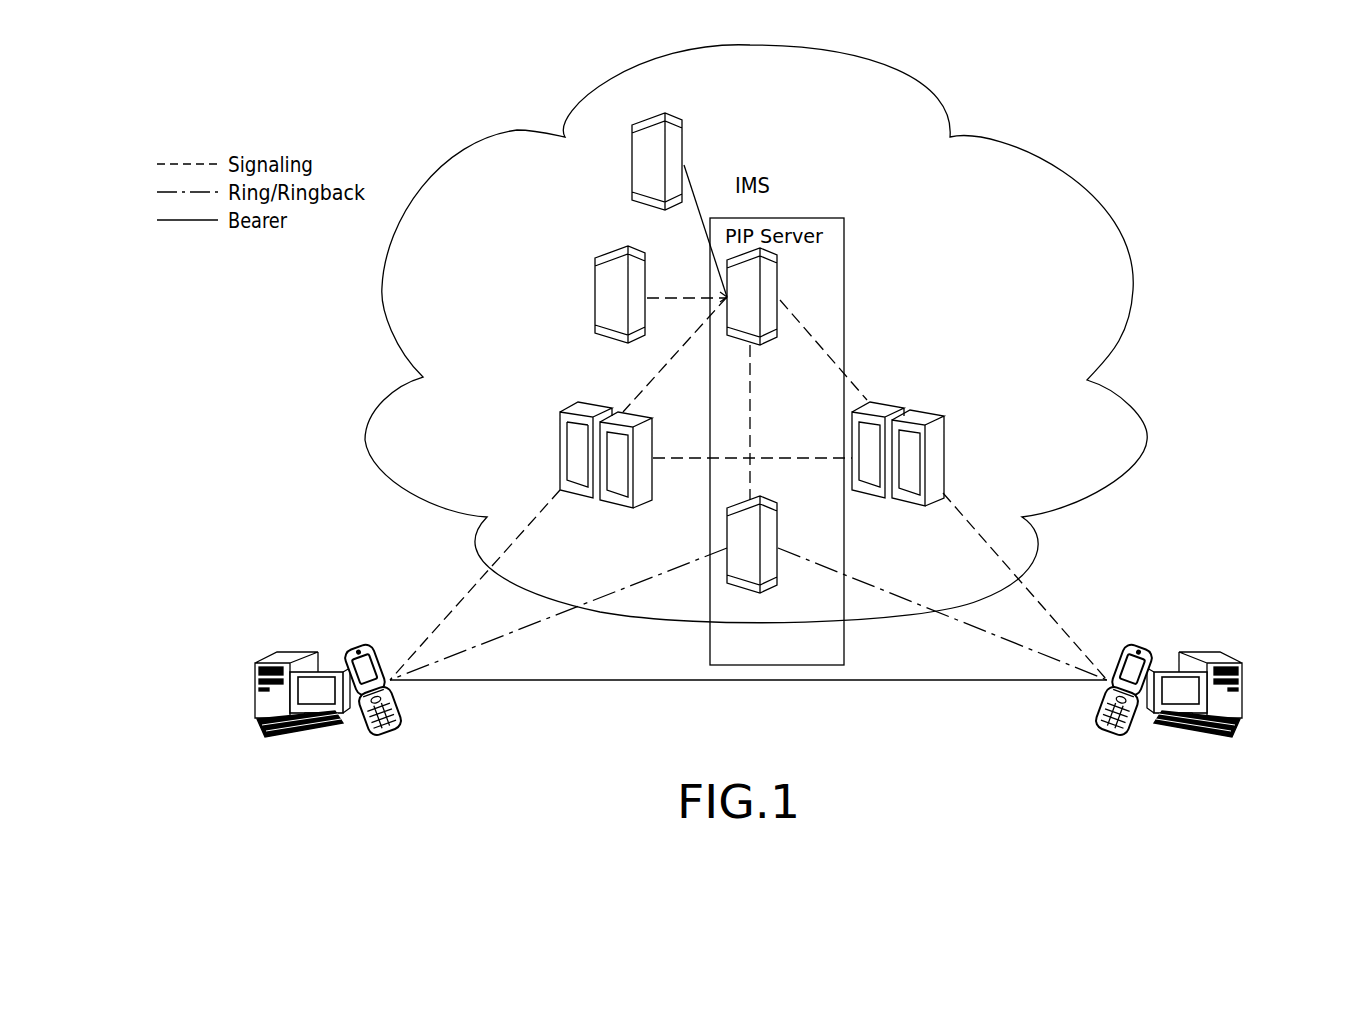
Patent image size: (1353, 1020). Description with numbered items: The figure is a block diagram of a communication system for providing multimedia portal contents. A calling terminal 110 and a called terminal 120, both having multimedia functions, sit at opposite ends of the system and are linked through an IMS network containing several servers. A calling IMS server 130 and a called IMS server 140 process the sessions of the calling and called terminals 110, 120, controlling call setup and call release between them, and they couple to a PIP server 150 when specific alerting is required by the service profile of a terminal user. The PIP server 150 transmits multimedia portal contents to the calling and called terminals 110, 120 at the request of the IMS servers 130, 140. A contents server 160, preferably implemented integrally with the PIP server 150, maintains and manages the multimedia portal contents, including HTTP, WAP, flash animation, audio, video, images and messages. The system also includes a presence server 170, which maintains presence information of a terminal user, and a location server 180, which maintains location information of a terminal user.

The calling terminal 110 is at (341, 722).
The called terminal 120 is at (1169, 722).
The calling IMS server 130 is at (597, 402).
The called IMS server 140 is at (926, 410).
The PIP server 150 is at (778, 263).
The contents server 160 is at (778, 512).
The presence server 170 is at (612, 248).
The location server 180 is at (648, 113).